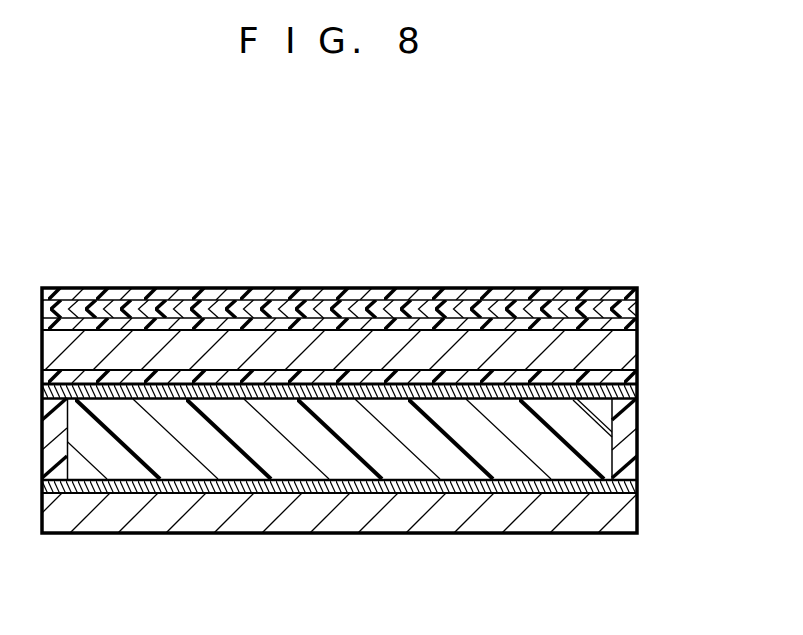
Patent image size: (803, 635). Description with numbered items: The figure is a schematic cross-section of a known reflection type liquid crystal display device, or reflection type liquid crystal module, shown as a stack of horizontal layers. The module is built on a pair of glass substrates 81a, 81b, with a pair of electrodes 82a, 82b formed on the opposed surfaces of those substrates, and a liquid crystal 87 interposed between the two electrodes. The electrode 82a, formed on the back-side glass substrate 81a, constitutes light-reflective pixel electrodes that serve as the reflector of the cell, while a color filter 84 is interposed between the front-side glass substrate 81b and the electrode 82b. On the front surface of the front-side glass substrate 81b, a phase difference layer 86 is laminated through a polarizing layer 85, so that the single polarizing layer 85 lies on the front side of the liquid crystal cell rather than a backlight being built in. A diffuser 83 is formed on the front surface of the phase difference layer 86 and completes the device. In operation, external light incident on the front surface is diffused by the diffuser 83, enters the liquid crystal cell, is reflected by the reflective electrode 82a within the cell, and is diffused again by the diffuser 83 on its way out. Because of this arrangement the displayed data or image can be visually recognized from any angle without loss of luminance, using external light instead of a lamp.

The glass substrate 81a is at (543, 518).
The glass substrate 81b is at (520, 338).
The electrode 82a is at (433, 485).
The electrode 82b is at (361, 393).
The diffuser 83 is at (244, 290).
The color filter 84 is at (339, 509).
The polarizing layer 85 is at (400, 323).
The phase difference layer 86 is at (333, 306).
The liquid crystal 87 is at (650, 423).